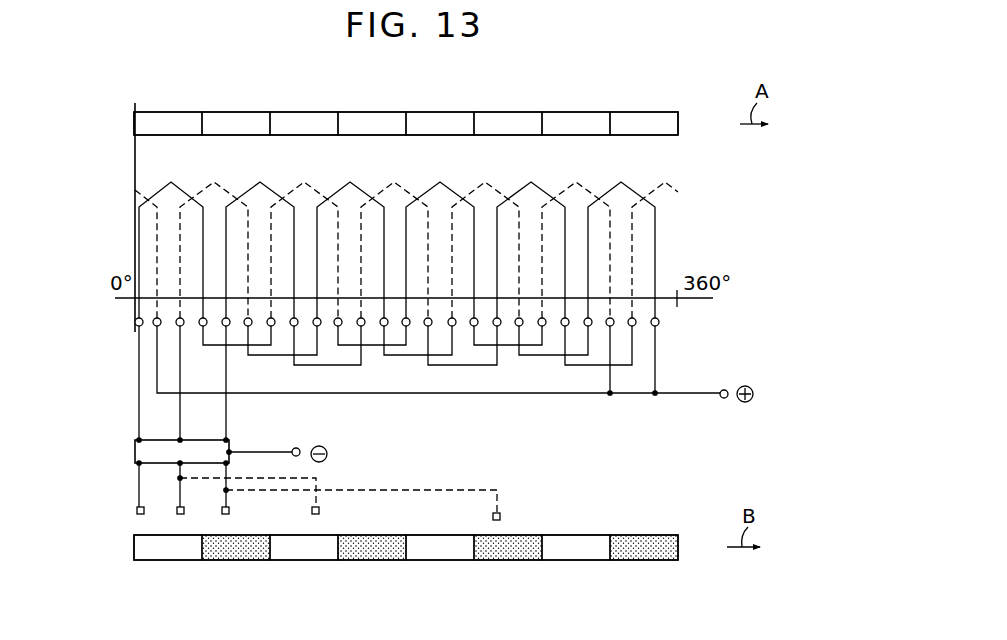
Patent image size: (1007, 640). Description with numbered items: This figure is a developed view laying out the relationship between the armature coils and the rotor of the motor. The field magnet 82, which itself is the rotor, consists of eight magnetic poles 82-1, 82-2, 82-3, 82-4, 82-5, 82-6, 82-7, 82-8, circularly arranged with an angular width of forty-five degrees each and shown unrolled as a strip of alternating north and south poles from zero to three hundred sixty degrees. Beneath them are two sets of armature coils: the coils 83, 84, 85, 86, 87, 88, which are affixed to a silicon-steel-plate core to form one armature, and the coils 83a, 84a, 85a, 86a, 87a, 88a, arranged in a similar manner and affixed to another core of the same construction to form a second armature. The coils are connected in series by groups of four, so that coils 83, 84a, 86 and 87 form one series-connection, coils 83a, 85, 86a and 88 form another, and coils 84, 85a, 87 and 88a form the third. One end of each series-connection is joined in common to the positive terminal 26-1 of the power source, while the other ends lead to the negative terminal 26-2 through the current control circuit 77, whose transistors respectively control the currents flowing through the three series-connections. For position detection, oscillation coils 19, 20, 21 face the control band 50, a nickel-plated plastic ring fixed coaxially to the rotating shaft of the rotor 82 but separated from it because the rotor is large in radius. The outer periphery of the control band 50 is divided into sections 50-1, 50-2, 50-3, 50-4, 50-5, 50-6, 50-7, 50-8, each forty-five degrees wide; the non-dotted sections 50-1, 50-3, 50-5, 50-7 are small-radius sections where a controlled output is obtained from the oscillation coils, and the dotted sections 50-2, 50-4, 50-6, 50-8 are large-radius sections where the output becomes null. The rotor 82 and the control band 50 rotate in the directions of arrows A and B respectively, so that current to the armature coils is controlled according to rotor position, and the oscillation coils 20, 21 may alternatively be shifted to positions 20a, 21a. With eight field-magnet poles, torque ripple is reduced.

The field magnet 82 is at (678, 135).
The magnetic pole 82-1 is at (160, 111).
The magnetic pole 82-2 is at (228, 111).
The magnetic pole 82-3 is at (300, 111).
The magnetic pole 82-4 is at (363, 111).
The magnetic pole 82-5 is at (427, 111).
The magnetic pole 82-6 is at (512, 112).
The magnetic pole 82-7 is at (588, 112).
The magnetic pole 82-8 is at (652, 112).
The armature coil 83 is at (177, 184).
The armature coil 83a is at (227, 187).
The armature coil 84 is at (272, 185).
The armature coil 84a is at (318, 187).
The armature coil 85 is at (362, 188).
The armature coil 85a is at (407, 187).
The armature coil 86 is at (455, 188).
The armature coil 86a is at (500, 188).
The armature coil 87 is at (548, 188).
The armature coil 87a is at (592, 188).
The armature coil 88 is at (640, 188).
The armature coil 88a is at (676, 192).
The positive terminal 26-1 is at (729, 390).
The negative terminal 26-2 is at (296, 448).
The current control circuit 77 is at (135, 447).
The oscillation coil 19 is at (137, 510).
The oscillation coil 20 is at (184, 508).
The oscillation coil 21 is at (230, 511).
The alternative position 20a is at (320, 511).
The alternative position 21a is at (501, 517).
The control band 50 is at (678, 535).
The small-radius section 50-1 is at (166, 561).
The large-radius section 50-2 is at (234, 561).
The small-radius section 50-3 is at (302, 561).
The large-radius section 50-4 is at (370, 561).
The small-radius section 50-5 is at (438, 561).
The large-radius section 50-6 is at (507, 561).
The small-radius section 50-7 is at (577, 561).
The large-radius section 50-8 is at (639, 561).